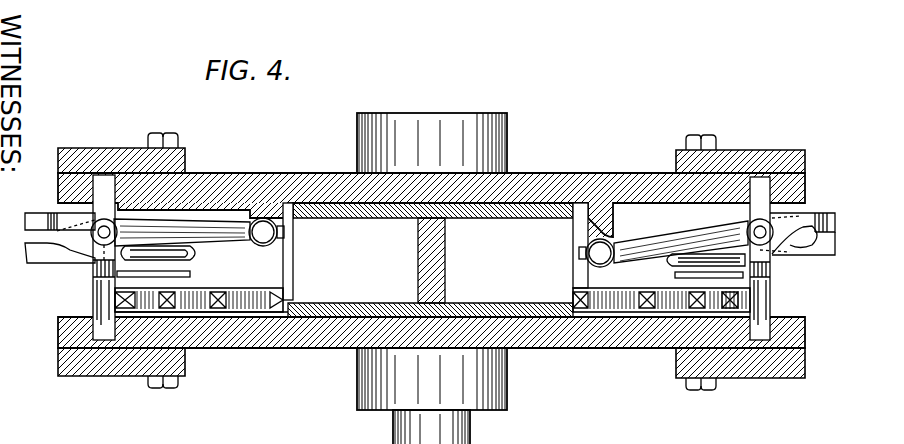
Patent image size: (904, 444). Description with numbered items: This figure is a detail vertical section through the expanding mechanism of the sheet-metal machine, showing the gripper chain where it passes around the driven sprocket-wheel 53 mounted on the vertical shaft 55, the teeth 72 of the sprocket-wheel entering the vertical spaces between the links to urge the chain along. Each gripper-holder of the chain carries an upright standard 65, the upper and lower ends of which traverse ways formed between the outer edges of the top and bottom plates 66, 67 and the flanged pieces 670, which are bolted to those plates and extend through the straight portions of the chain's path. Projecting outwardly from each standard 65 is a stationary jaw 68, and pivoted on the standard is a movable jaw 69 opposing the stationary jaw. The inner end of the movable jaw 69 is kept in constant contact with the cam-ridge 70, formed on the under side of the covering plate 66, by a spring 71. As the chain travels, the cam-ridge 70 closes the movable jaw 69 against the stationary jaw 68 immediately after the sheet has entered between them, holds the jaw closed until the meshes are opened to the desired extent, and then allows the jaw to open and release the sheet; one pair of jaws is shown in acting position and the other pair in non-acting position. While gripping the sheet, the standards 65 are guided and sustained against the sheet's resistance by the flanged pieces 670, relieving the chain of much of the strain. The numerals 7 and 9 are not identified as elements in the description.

The flanged pieces 670 is at (59, 178).
The top plate 66 is at (228, 173).
The bottom plate 67 is at (283, 344).
The driven sprocket-wheel 53 is at (258, 306).
The vertical shaft 55 is at (395, 437).
The upright standard 65 is at (95, 275).
The rocker arm 7 is at (93, 280).
The fork end 9 is at (28, 244).
The stationary jaw 68 is at (836, 217).
The movable jaw 69 is at (836, 245).
The cam-ridge 70 is at (265, 217).
The spring 71 is at (150, 251).
The sprocket-wheel teeth 72 is at (227, 292).